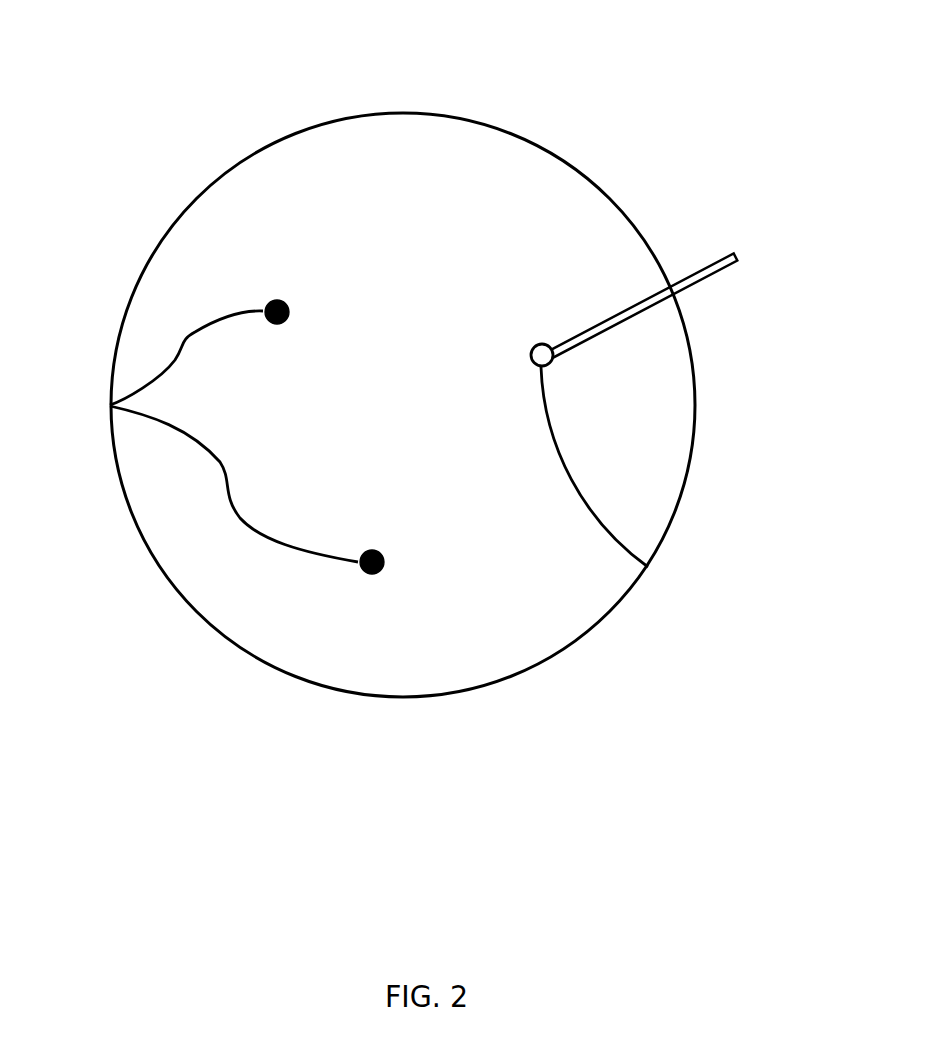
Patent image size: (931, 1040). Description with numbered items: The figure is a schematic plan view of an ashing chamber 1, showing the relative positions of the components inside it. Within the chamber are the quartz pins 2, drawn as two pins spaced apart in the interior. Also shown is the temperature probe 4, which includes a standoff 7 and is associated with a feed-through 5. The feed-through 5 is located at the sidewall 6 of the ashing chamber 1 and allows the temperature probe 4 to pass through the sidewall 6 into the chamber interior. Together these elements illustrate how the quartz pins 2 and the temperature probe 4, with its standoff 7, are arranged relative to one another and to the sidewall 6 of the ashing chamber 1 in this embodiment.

The ashing chamber 1 is at (350, 86).
The quartz pins 2 is at (110, 405).
The temperature probe 4 is at (598, 272).
The feed-through 5 is at (680, 288).
The sidewall 6 is at (697, 418).
The standoff 7 is at (648, 567).